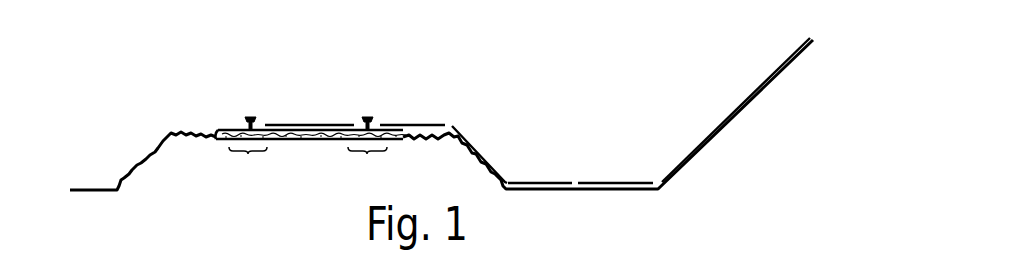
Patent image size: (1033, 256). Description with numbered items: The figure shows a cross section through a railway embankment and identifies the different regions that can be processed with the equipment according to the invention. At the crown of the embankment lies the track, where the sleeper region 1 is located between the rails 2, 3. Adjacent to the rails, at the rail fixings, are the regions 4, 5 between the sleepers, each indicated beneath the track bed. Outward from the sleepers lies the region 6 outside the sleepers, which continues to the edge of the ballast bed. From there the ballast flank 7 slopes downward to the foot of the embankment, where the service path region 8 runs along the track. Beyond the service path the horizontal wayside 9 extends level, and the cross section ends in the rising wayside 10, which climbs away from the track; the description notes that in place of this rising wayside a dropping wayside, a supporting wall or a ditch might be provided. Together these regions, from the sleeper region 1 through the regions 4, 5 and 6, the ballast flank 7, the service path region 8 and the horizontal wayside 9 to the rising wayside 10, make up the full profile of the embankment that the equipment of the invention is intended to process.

The sleeper region 1 is at (321, 124).
The rail 2 is at (250, 116).
The rail 3 is at (367, 116).
The region between the sleepers 4 is at (367, 163).
The region between the sleepers 5 is at (248, 163).
The region outside the sleepers 6 is at (430, 124).
The ballast flank 7 is at (474, 144).
The service path region 8 is at (527, 182).
The horizontal wayside 9 is at (605, 182).
The rising wayside 10 is at (749, 97).